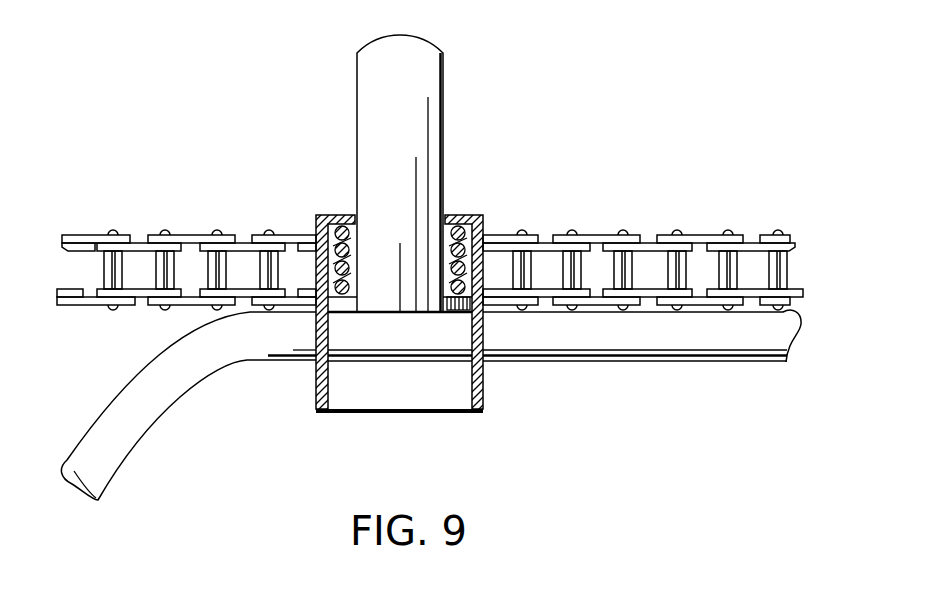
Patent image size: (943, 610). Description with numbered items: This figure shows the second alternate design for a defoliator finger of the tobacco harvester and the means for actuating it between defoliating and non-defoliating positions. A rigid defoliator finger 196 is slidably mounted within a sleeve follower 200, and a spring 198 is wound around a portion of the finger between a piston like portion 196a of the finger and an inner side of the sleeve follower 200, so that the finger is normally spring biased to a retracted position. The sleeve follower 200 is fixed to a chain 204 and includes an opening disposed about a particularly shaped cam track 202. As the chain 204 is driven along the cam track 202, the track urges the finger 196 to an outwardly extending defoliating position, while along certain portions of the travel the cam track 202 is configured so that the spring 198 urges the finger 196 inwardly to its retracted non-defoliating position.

The rigid defoliator finger 196 is at (423, 80).
The piston like portion 196a is at (485, 325).
The spring 198 is at (485, 237).
The sleeve follower 200 is at (485, 213).
The cam track 202 is at (232, 351).
The chain 204 is at (685, 240).